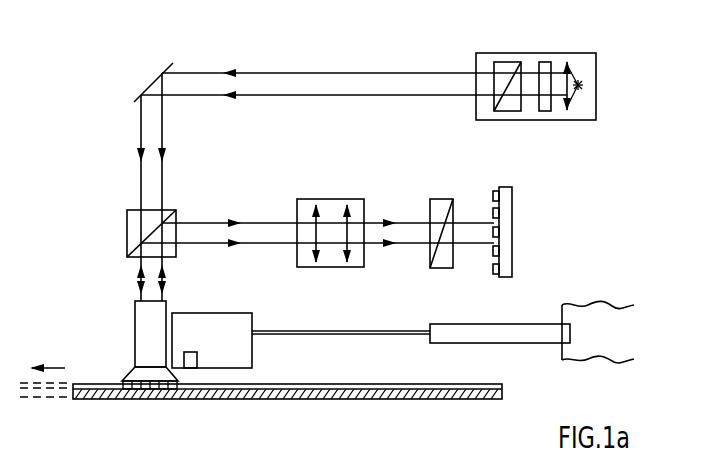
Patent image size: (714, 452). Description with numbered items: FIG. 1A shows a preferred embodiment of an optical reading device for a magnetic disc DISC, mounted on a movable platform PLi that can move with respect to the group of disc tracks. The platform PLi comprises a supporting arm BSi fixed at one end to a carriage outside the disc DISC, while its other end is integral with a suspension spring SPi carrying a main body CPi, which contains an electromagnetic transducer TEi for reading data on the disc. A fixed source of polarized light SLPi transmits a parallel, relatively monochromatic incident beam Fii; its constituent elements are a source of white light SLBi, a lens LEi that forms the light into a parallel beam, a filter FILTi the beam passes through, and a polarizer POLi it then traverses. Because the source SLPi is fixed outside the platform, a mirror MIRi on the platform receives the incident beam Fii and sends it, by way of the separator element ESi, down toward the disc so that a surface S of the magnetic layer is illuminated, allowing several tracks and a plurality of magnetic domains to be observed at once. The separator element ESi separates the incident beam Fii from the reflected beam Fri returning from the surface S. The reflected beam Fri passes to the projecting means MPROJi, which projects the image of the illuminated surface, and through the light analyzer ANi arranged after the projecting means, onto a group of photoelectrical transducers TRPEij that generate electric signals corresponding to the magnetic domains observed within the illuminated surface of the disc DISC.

The mirror MIRi is at (162, 70).
The incident beam Fii is at (104, 312).
The source of polarized light SLPi is at (596, 68).
The polarizer POLi is at (494, 61).
The filter FILTi is at (543, 62).
The lens LEi is at (572, 104).
The source of white light SLBi is at (583, 85).
The separator element ESi is at (127, 232).
The reflected beam Fri is at (315, 243).
The projecting means MPROJi is at (307, 199).
The light analyzer ANi is at (431, 199).
The group of photoelectrical transducers TRPEij is at (499, 251).
The main body CPi is at (252, 351).
The electromagnetic transducer TEi is at (187, 352).
The suspension spring SPi is at (352, 334).
The platform PLi is at (253, 327).
The supporting arm BSi is at (497, 323).
The magnetic disc DISC is at (391, 413).
The surface S is at (143, 399).